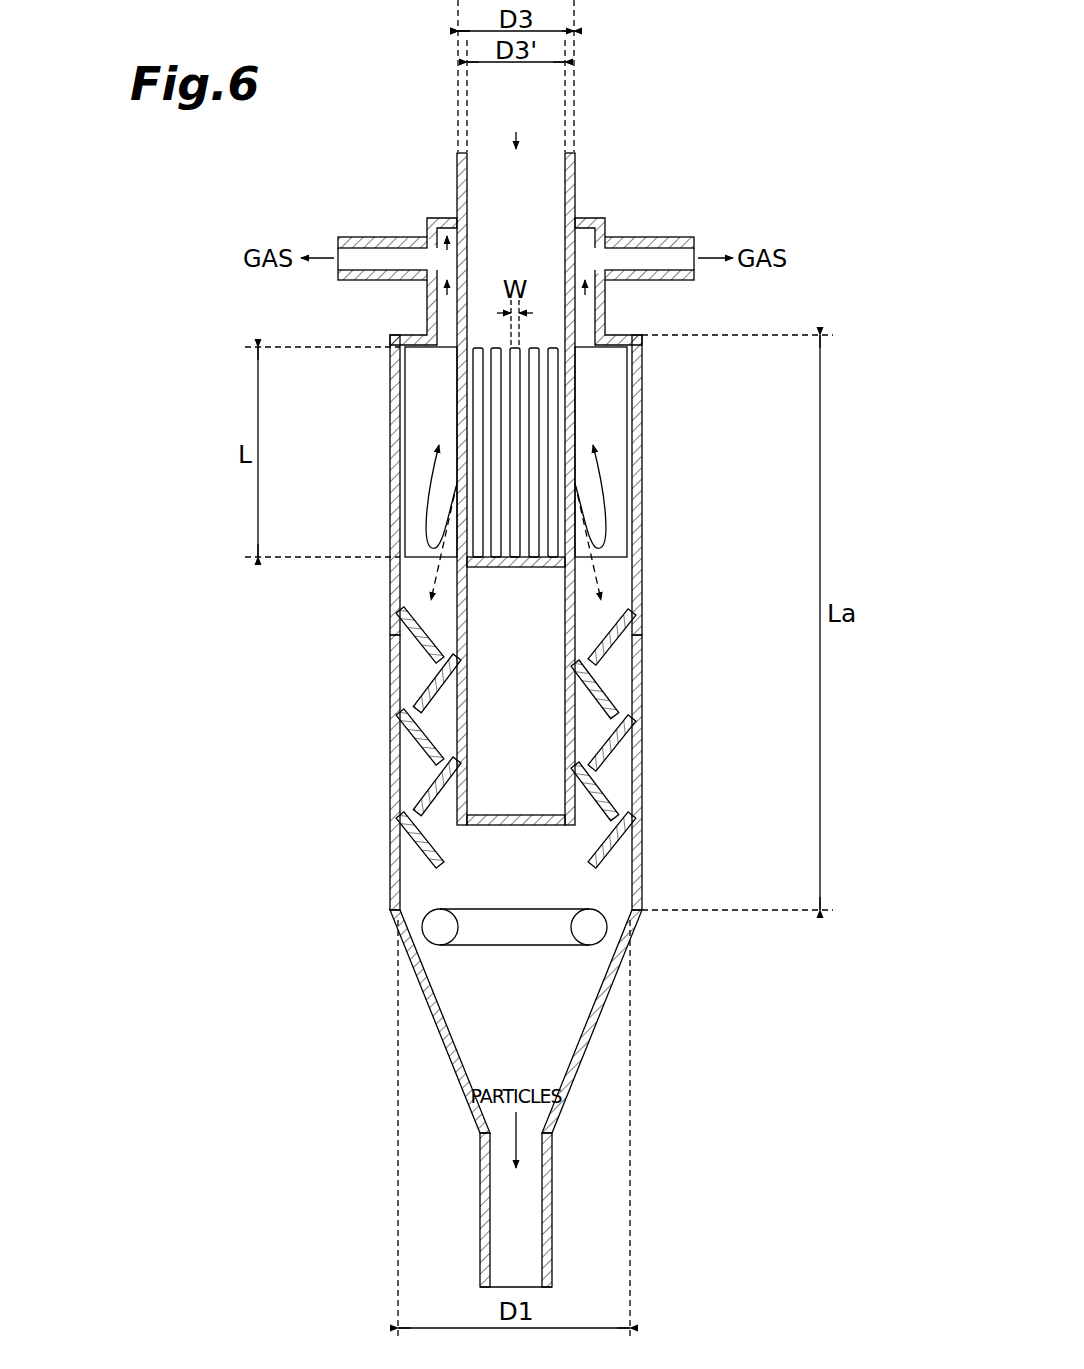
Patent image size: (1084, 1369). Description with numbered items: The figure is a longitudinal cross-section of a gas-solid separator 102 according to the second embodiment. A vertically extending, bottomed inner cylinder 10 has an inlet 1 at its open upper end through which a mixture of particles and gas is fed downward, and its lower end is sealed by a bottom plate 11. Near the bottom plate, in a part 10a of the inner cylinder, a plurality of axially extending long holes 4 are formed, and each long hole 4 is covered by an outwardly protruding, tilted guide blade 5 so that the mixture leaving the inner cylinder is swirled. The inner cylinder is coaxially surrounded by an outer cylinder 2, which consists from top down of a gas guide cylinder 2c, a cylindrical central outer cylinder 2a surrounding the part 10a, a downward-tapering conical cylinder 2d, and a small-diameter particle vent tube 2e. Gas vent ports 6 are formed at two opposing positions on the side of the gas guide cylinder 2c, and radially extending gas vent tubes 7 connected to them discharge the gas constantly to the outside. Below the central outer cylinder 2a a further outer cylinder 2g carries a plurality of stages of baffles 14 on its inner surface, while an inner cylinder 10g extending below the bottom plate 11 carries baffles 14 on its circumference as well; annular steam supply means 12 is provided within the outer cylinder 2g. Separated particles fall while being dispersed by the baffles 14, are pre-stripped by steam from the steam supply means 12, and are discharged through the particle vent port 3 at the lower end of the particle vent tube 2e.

The inlet 1 is at (543, 166).
The outer cylinder 2 is at (793, 363).
The central outer cylinder 2a is at (642, 426).
The gas guide cylinder 2c is at (606, 296).
The conical cylinder 2d is at (617, 975).
The particle vent tube 2e is at (552, 1160).
The outer cylinder 2g is at (642, 790).
The particle vent port 3 is at (548, 1293).
The long hole 4 is at (548, 347).
The guide blade 5 is at (415, 398).
The gas vent port 6 is at (443, 221).
The gas vent tube 7 is at (375, 237).
The inner cylinder 10 is at (575, 192).
The part in which the long holes are formed 10a is at (330, 347).
The inner cylinder 10g is at (576, 728).
The bottom plate 11 is at (525, 827).
The steam supply means 12 is at (437, 946).
The baffle 14 is at (415, 745).
The gas-solid separator 102 is at (752, 178).